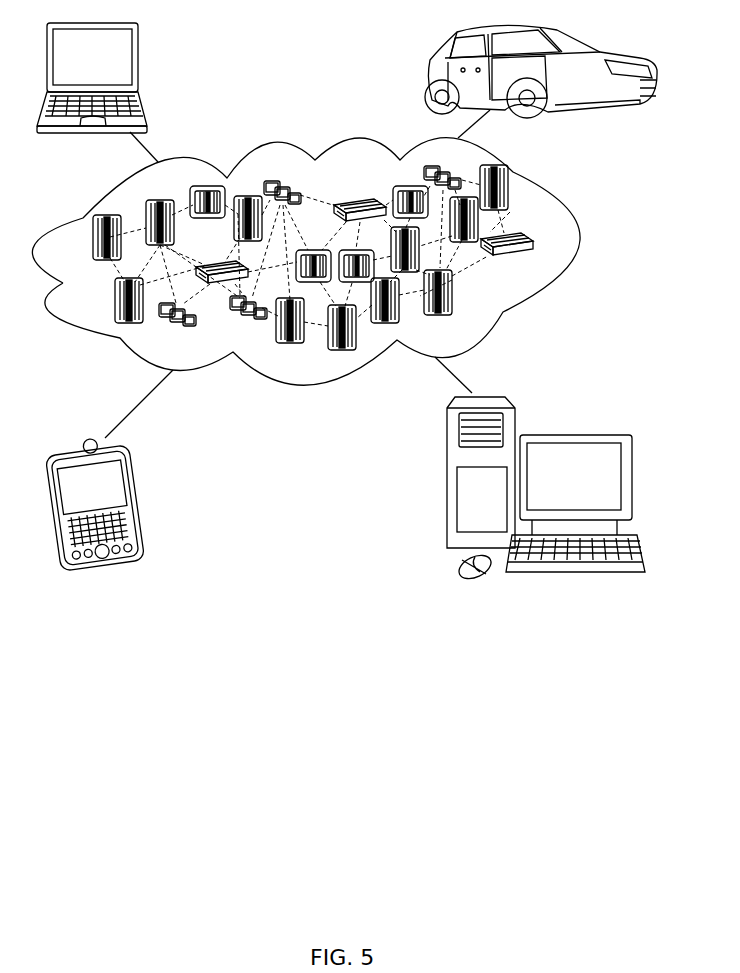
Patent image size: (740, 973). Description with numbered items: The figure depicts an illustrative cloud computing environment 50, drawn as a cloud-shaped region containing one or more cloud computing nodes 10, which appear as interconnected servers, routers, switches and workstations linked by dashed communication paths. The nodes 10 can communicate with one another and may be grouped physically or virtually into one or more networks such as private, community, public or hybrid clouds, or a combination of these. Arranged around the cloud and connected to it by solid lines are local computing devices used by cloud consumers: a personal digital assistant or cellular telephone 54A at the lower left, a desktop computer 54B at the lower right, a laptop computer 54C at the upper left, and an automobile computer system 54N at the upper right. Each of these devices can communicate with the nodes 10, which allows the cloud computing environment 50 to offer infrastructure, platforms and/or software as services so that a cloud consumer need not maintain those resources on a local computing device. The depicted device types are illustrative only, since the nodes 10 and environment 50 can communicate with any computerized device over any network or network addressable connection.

The cloud computing nodes 10 is at (533, 264).
The cloud computing environment 50 is at (575, 237).
The personal digital assistant or cellular telephone 54A is at (134, 493).
The desktop computer 54B is at (575, 433).
The laptop computer 54C is at (140, 54).
The automobile computer system 54N is at (430, 72).